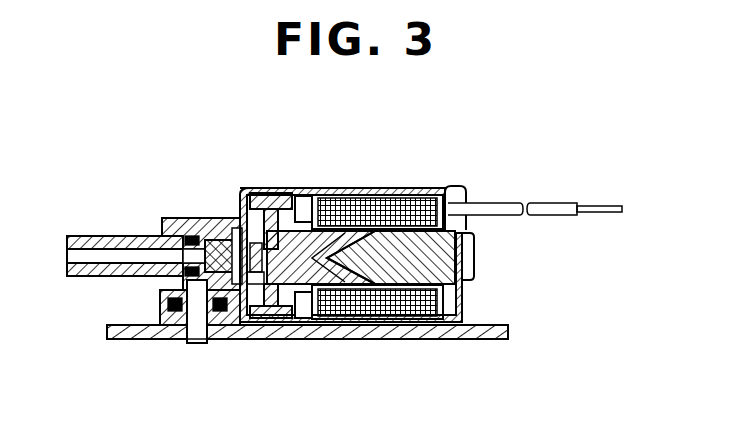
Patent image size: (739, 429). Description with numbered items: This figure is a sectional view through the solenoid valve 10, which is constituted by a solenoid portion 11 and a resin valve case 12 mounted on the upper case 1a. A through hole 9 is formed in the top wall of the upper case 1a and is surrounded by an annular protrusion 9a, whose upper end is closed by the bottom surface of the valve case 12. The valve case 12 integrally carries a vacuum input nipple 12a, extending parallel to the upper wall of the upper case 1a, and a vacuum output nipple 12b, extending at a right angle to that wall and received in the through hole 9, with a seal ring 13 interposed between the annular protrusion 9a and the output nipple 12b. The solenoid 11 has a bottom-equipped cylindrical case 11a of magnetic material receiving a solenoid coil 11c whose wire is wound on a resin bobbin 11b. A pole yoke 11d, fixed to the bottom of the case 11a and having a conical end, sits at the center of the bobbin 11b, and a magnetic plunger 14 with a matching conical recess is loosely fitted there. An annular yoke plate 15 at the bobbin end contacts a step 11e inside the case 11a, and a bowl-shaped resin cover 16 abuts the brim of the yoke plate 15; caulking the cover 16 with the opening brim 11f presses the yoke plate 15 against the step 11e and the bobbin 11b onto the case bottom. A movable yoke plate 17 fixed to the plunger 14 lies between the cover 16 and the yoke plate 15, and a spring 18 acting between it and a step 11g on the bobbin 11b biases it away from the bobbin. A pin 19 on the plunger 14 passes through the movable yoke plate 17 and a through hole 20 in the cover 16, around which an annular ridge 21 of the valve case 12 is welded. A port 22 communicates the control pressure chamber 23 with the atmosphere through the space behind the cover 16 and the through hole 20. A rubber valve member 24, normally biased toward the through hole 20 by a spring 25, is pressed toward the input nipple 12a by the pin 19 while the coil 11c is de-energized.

The upper case 1a is at (491, 340).
The through hole 9 is at (170, 334).
The annular protrusion 9a is at (170, 301).
The solenoid valve 10 is at (250, 190).
The solenoid portion 11 is at (405, 235).
The cylindrical case 11a is at (394, 188).
The bobbin 11b is at (463, 190).
The solenoid coil 11c is at (432, 323).
The pole yoke 11d is at (476, 247).
The step 11e is at (305, 195).
The opening brim 11f is at (246, 225).
The step 11g is at (330, 194).
The valve case 12 is at (123, 233).
The vacuum input nipple 12a is at (78, 236).
The vacuum output nipple 12b is at (195, 344).
The seal ring 13 is at (212, 322).
The plunger 14 is at (330, 284).
The yoke plate 15 is at (320, 323).
The cover 16 is at (243, 188).
The movable yoke plate 17 is at (290, 320).
The spring 18 is at (280, 194).
The pin 19 is at (256, 320).
The through hole 20 is at (273, 320).
The annular ridge 21 is at (250, 320).
The port 22 is at (236, 230).
The control pressure chamber 23 is at (222, 240).
The valve member 24 is at (188, 268).
The spring 25 is at (185, 220).